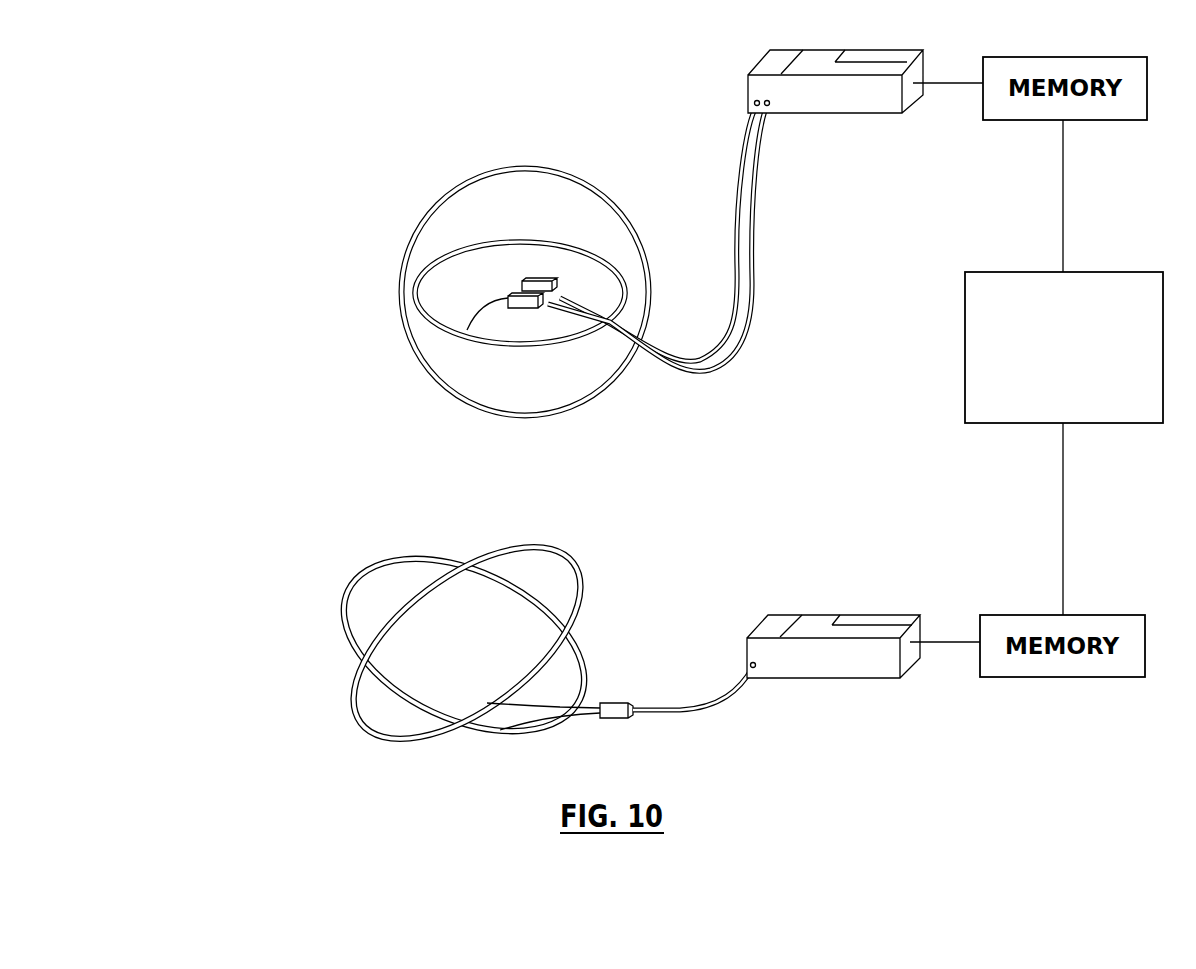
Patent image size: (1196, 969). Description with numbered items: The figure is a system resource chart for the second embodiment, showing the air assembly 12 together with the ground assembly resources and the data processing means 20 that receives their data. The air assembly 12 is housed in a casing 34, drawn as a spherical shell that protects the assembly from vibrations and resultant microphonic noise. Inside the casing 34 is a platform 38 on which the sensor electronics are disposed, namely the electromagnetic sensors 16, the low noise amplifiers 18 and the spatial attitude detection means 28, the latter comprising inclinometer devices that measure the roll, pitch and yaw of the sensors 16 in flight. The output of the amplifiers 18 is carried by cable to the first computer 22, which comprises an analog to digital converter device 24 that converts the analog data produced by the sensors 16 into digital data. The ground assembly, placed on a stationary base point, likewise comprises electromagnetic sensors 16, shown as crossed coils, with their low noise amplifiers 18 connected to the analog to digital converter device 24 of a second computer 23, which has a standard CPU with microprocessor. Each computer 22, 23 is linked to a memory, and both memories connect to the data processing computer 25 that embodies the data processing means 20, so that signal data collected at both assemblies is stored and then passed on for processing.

The air assembly 12 is at (337, 125).
The electromagnetic sensors 16 is at (492, 243).
The low noise amplifiers 18 is at (517, 284).
The data processing means 20 is at (861, 389).
The first computer 22 is at (892, 111).
The second computer 23 is at (888, 671).
The analog to digital converter device 24 is at (770, 106).
The data processing computer 25 is at (965, 368).
The spatial attitude detection means 28 is at (547, 278).
The casing 34 is at (457, 188).
The platform 38 is at (462, 282).